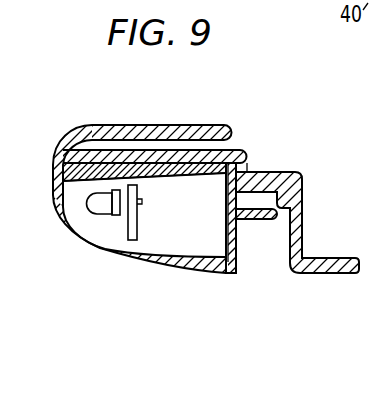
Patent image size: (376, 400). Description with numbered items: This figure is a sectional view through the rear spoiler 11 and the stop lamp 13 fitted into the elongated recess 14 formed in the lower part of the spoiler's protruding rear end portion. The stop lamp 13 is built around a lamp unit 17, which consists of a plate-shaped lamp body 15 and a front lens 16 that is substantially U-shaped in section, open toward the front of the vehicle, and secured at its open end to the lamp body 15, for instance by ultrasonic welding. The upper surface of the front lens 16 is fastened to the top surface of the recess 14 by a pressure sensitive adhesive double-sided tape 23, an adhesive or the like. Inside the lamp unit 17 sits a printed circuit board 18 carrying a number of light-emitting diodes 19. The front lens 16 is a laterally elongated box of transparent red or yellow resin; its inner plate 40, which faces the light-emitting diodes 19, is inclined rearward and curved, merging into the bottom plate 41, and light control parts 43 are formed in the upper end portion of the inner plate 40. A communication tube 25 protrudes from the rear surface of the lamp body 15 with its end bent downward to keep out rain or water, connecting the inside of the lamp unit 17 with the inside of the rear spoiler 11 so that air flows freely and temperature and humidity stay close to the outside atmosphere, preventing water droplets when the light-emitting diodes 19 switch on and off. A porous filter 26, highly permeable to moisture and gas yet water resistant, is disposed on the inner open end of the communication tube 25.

The rear spoiler 11 is at (161, 122).
The stop lamp 13 is at (45, 247).
The elongated recess 14 is at (288, 260).
The lamp body 15 is at (238, 249).
The front lens 16 is at (218, 277).
The lamp unit 17 is at (267, 333).
The printed circuit board 18 is at (130, 241).
The light-emitting diodes 19 is at (100, 214).
The pressure sensitive adhesive double-sided tape 23 is at (118, 150).
The communication tubes 25 is at (273, 172).
The filter 26 is at (225, 205).
The inner plate 40 is at (73, 205).
The bottom plate 41 is at (162, 255).
The light control parts 43 is at (67, 150).